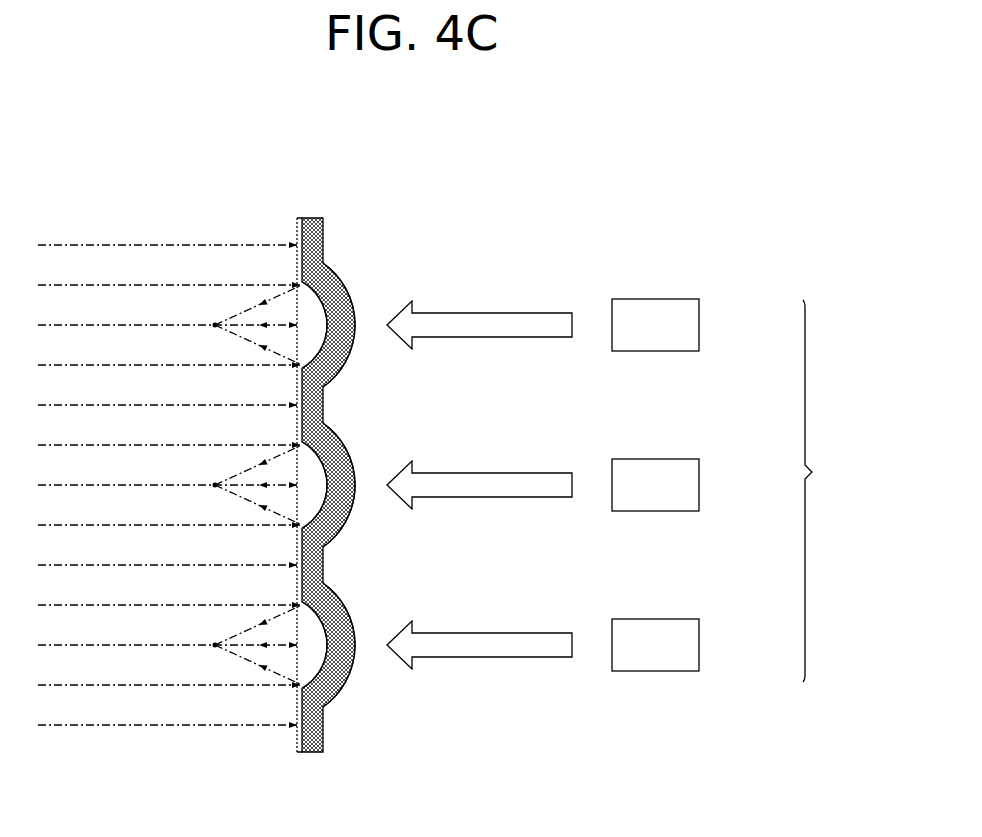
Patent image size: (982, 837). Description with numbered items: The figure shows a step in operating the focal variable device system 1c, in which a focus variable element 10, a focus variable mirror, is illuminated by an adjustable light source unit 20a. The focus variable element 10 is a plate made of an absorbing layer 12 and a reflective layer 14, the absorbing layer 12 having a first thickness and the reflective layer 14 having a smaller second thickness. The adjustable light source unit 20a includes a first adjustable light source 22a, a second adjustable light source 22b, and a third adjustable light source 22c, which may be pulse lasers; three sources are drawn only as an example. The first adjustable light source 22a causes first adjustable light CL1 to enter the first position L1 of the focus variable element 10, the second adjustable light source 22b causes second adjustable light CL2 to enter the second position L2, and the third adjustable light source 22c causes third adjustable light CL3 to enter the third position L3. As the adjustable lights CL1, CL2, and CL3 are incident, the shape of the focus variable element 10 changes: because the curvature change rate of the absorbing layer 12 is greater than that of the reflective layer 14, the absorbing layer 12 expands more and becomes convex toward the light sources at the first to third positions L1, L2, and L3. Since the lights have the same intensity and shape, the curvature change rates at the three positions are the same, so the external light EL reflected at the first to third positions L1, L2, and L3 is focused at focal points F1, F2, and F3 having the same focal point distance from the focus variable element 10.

The focal variable device system 1c is at (557, 129).
The focus variable element 10 is at (320, 210).
The absorbing layer 12 is at (325, 228).
The reflective layer 14 is at (312, 252).
The external light EL is at (92, 244).
The focal point F1 is at (213, 324).
The focal point F2 is at (213, 484).
The focal point F3 is at (213, 644).
The first position L1 is at (355, 364).
The second position L2 is at (355, 524).
The third position L3 is at (355, 684).
The first adjustable light CL1 is at (492, 312).
The second adjustable light CL2 is at (492, 472).
The third adjustable light CL3 is at (492, 632).
The first adjustable light source 22a is at (699, 305).
The second adjustable light source 22b is at (699, 465).
The third adjustable light source 22c is at (699, 625).
The adjustable light source unit 20a is at (832, 491).